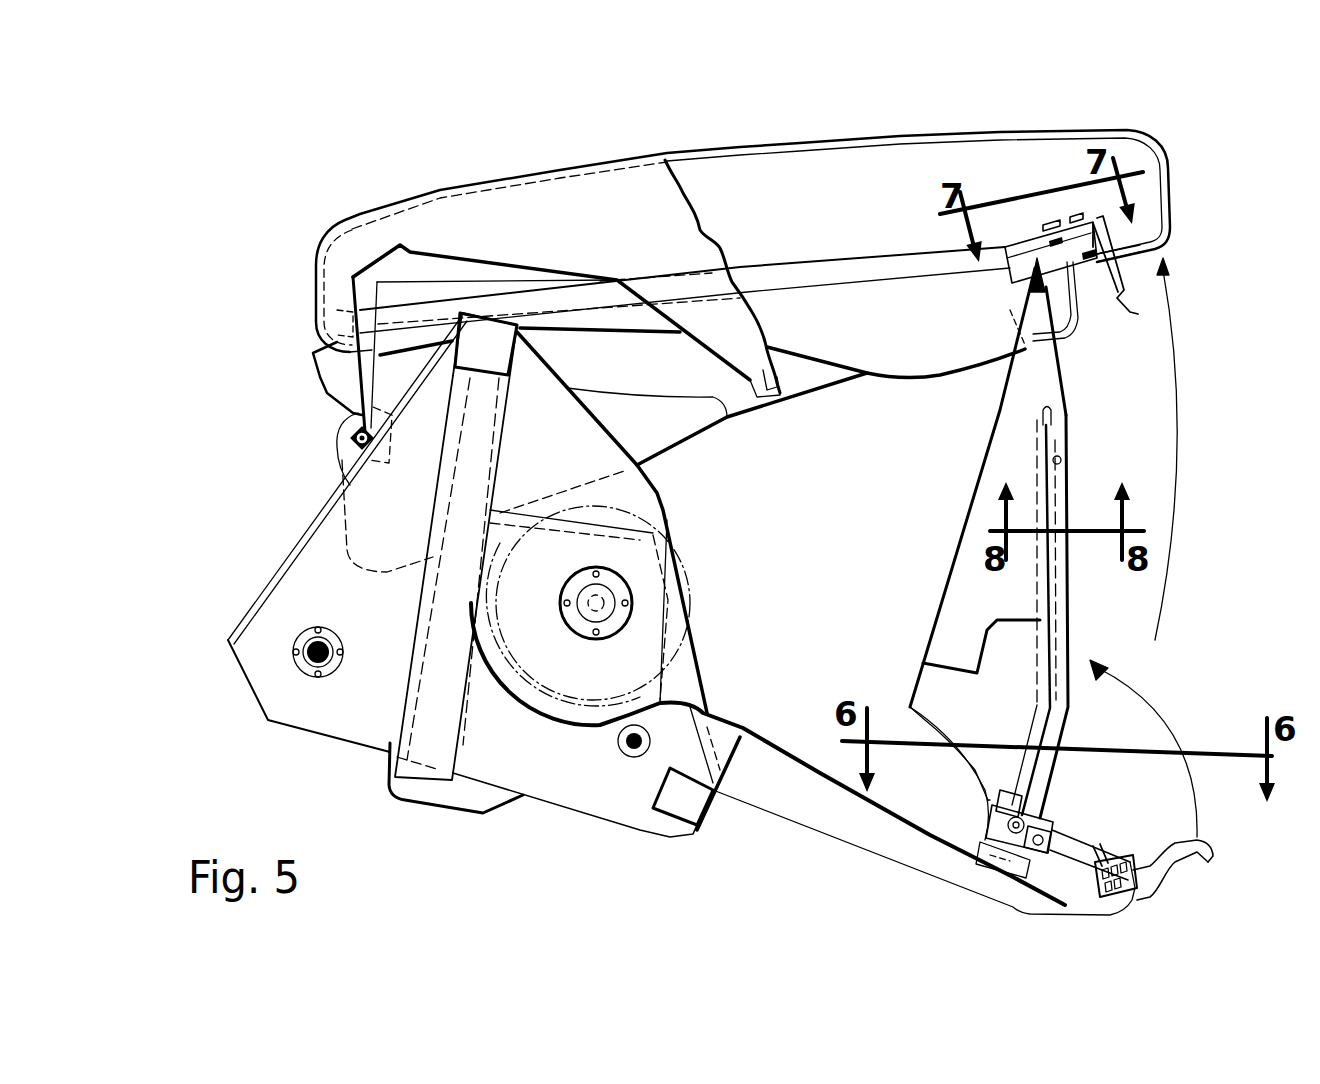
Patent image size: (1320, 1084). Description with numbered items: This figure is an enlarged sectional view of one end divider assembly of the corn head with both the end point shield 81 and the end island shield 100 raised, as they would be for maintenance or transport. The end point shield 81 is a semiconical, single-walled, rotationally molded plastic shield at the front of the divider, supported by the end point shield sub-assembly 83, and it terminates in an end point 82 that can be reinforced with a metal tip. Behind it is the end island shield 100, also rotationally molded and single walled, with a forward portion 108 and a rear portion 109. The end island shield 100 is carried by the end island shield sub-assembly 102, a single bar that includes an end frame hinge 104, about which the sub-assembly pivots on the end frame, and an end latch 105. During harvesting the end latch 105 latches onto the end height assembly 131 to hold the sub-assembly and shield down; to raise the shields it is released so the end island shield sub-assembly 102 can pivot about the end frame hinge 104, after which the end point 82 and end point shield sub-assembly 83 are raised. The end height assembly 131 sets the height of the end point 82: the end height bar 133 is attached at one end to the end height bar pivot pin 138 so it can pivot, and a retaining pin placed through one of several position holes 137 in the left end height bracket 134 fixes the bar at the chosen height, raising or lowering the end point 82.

The end island shield 100 is at (822, 138).
The end island shield sub-assembly 102 is at (762, 265).
The forward portion 108 is at (1150, 236).
The end latch 105 is at (1128, 282).
The rear portion 109 is at (340, 325).
The end frame hinge 104 is at (355, 440).
The end point 82 is at (1003, 272).
The end point shield 81 is at (992, 468).
The end point shield sub-assembly 83 is at (1043, 726).
The end height bar pivot pin 138 is at (1010, 858).
The end height assembly 131 is at (1020, 905).
The left end height bracket 134 is at (1113, 890).
The position holes 137 is at (1108, 848).
The end height bar 133 is at (1184, 872).